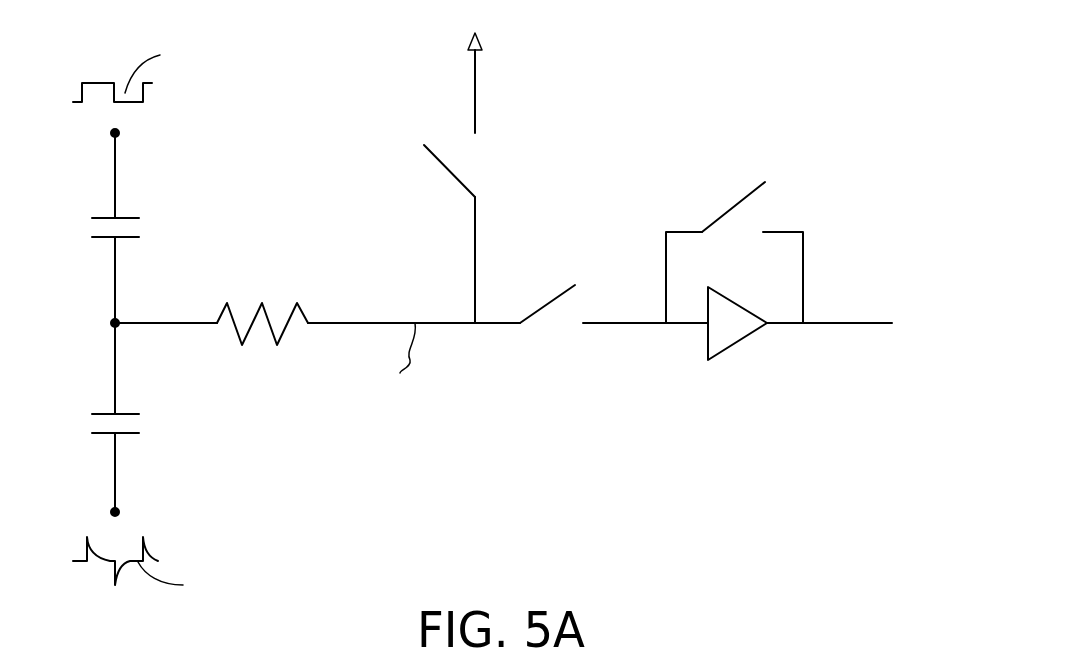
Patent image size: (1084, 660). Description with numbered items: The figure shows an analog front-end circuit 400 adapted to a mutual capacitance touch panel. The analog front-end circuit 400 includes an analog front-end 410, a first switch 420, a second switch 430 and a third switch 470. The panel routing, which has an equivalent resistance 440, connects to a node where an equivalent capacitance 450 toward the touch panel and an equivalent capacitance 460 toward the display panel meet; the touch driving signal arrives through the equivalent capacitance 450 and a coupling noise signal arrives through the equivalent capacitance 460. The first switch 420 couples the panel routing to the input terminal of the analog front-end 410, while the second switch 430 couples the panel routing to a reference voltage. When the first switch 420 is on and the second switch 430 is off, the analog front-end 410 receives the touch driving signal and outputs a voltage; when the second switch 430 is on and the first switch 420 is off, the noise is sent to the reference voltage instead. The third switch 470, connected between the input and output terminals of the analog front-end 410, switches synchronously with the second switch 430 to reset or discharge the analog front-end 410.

The analog front-end circuit 400 is at (517, 299).
The analog front-end 410 is at (738, 330).
The first switch 420 is at (555, 322).
The second switch 430 is at (477, 160).
The equivalent resistance 440 is at (268, 297).
The equivalent capacitance 450 is at (141, 228).
The equivalent capacitance 460 is at (150, 423).
The third switch 470 is at (738, 188).